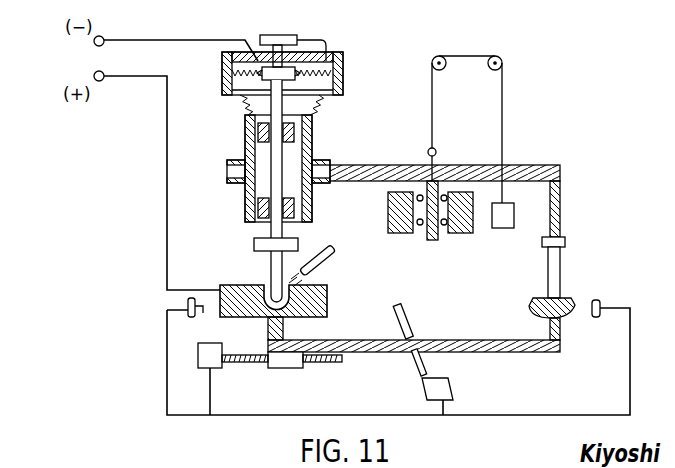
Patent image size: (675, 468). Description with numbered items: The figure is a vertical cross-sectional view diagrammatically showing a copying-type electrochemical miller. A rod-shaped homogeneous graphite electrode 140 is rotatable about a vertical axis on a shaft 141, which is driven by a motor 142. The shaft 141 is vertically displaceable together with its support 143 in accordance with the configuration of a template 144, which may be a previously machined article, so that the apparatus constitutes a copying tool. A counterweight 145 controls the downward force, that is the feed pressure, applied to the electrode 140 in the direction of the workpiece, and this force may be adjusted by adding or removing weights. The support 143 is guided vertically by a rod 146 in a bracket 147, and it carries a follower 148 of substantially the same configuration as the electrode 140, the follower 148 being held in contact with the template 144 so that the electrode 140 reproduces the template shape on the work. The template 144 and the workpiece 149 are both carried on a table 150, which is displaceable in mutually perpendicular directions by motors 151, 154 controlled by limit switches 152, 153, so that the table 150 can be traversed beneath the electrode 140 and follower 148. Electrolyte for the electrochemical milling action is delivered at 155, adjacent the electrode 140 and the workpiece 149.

The electrode 140 is at (271, 267).
The shaft 141 is at (272, 181).
The motor 142 is at (262, 35).
The support 143 is at (308, 197).
The template 144 is at (570, 298).
The counterweight 145 is at (496, 229).
The rod 146 is at (432, 241).
The bracket 147 is at (410, 235).
The follower 148 is at (560, 268).
The workpiece 149 is at (301, 301).
The table 150 is at (363, 347).
The motor 151 is at (217, 370).
The limit switch 152 is at (194, 318).
The limit switch 153 is at (593, 318).
The motor 154 is at (453, 392).
The electrolyte delivery 155 is at (318, 253).